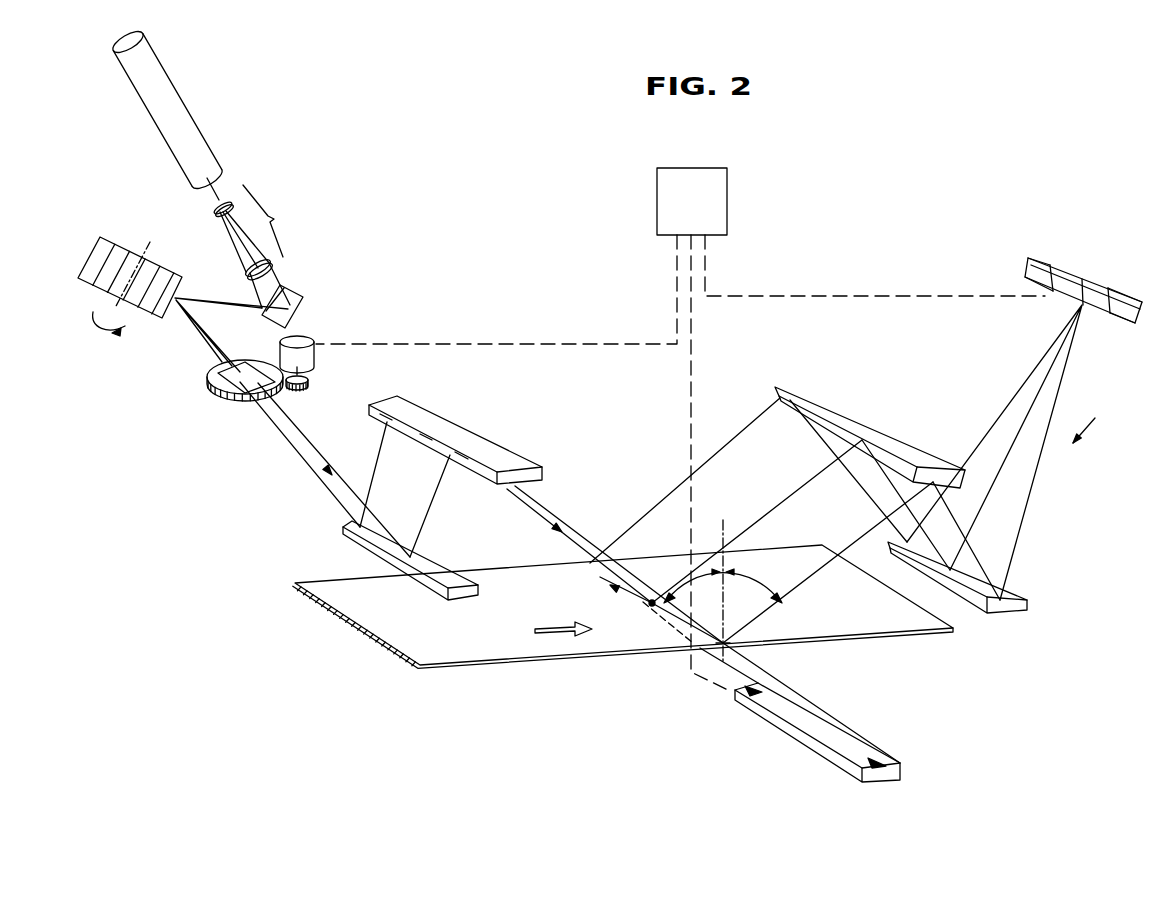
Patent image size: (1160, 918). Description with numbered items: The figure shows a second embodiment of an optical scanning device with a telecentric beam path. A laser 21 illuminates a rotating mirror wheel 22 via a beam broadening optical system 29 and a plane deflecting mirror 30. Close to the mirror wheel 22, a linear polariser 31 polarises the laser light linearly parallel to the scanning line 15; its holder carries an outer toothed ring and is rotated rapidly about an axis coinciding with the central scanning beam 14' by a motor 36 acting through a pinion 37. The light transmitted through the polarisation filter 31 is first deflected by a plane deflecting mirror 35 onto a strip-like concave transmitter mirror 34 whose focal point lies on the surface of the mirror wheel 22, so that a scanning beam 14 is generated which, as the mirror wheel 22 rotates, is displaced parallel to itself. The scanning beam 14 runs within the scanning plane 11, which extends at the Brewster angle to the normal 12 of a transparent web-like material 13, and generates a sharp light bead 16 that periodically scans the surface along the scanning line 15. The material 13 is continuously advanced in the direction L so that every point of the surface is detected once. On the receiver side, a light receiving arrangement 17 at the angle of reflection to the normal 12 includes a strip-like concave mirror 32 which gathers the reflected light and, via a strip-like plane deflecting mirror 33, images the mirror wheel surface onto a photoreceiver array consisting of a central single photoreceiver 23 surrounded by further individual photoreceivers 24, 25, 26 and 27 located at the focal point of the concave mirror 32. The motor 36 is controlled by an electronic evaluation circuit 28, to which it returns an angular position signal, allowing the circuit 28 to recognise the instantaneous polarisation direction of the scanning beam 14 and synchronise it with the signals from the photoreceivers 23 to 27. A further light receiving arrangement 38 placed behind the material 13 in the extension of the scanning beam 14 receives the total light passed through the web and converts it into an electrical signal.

The scanning beam plane 11 is at (552, 517).
The normal 12 is at (723, 520).
The web-like material 13 is at (474, 655).
The scanning beam 14 is at (615, 566).
The central scanning beam 14' is at (325, 469).
The scanning line 15 is at (680, 630).
The light bead 16 is at (655, 598).
The light receiving arrangement 17 is at (1094, 422).
The laser 21 is at (182, 110).
The mirror wheel 22 is at (112, 255).
The central single photoreceiver 23 is at (1078, 283).
The individual photoreceiver 24 is at (1127, 322).
The individual photoreceiver 25 is at (1120, 297).
The individual photoreceiver 26 is at (1050, 260).
The individual photoreceiver 27 is at (1027, 272).
The electronic evaluation circuit 28 is at (727, 196).
The beam broadening optical system 29 is at (258, 246).
The plane deflecting mirror 30 is at (292, 297).
The linear polariser 31 is at (218, 393).
The strip-like concave mirror 32 is at (888, 438).
The strip-like plane deflecting mirror 33 is at (1013, 610).
The strip-like concave transmitter mirror 34 is at (468, 437).
The plane deflecting mirror 35 is at (348, 541).
The motor 36 is at (305, 337).
The pinion 37 is at (310, 380).
The further light receiving arrangement 38 is at (780, 722).
The direction of advance L is at (542, 645).